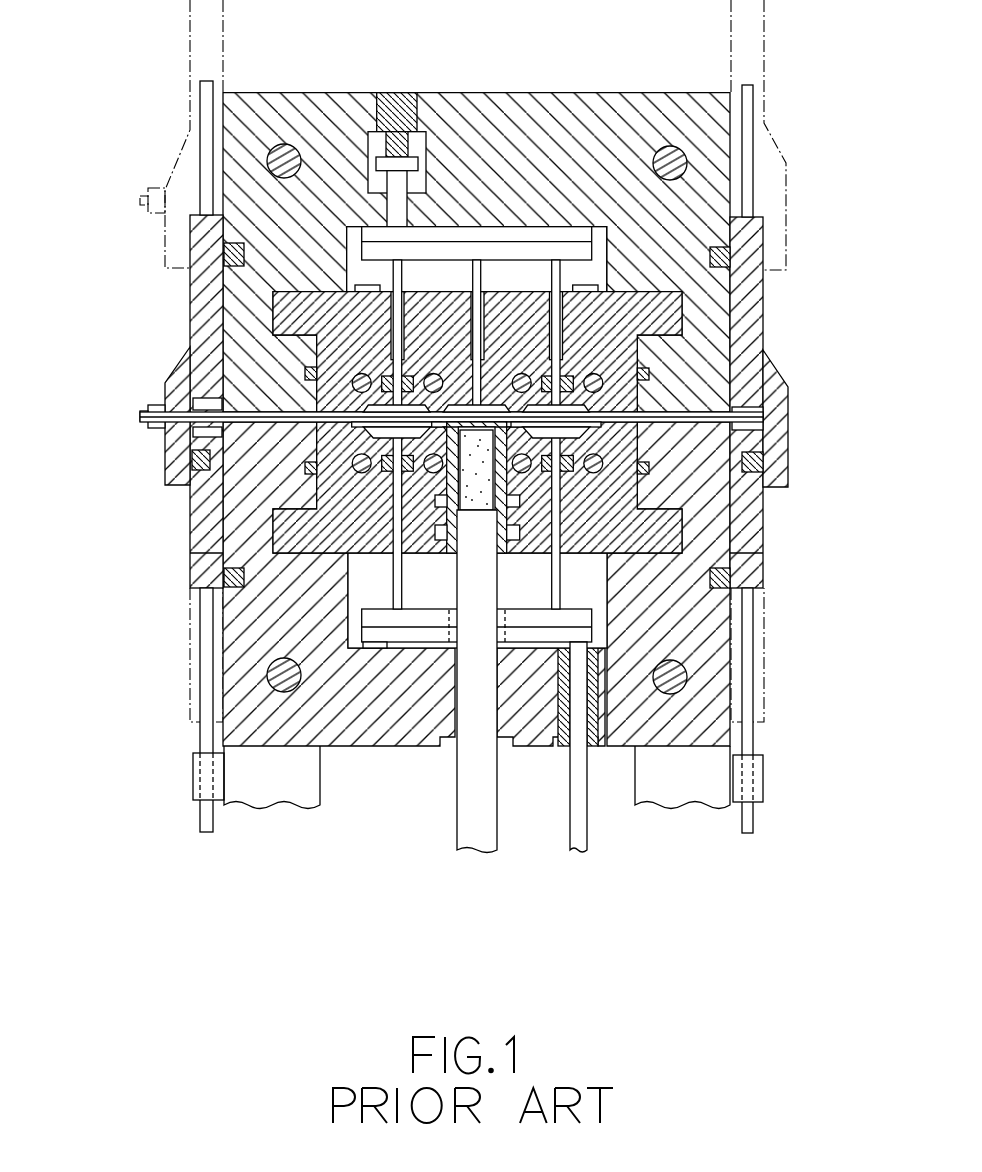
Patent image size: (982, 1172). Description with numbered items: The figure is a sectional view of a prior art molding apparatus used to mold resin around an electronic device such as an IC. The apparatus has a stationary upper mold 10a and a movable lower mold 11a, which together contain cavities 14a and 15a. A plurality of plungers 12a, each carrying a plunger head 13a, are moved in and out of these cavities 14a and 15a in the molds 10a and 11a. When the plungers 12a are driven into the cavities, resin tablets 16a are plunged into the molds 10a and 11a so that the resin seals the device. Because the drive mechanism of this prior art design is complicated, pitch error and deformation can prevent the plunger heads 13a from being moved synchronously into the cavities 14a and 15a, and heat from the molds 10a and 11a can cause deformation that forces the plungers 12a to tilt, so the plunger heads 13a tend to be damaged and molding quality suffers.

The stationary upper mold 10a is at (635, 315).
The movable lower mold 11a is at (625, 526).
The plunger 12a is at (470, 835).
The plunger head 13a is at (473, 535).
The cavity 14a is at (377, 408).
The cavity 15a is at (377, 434).
The resin tablet 16a is at (296, 550).